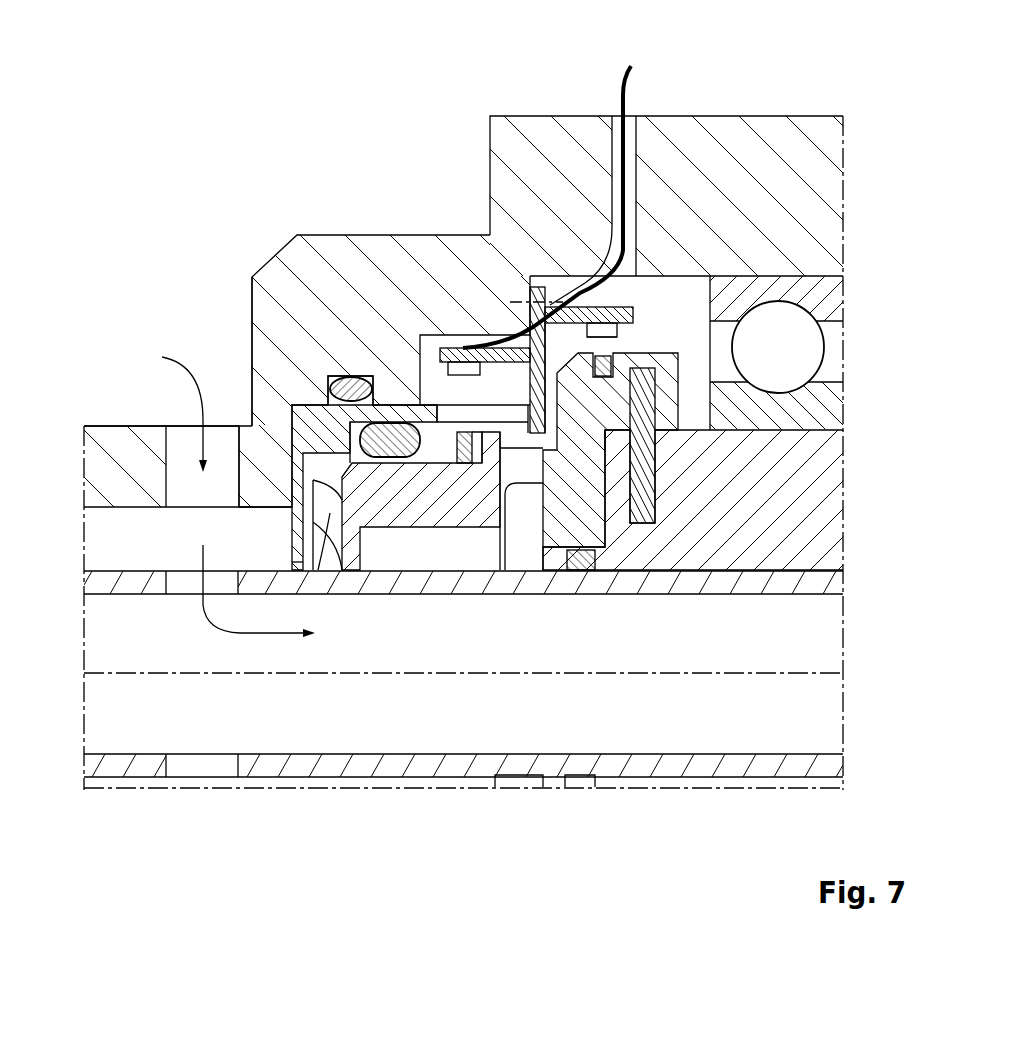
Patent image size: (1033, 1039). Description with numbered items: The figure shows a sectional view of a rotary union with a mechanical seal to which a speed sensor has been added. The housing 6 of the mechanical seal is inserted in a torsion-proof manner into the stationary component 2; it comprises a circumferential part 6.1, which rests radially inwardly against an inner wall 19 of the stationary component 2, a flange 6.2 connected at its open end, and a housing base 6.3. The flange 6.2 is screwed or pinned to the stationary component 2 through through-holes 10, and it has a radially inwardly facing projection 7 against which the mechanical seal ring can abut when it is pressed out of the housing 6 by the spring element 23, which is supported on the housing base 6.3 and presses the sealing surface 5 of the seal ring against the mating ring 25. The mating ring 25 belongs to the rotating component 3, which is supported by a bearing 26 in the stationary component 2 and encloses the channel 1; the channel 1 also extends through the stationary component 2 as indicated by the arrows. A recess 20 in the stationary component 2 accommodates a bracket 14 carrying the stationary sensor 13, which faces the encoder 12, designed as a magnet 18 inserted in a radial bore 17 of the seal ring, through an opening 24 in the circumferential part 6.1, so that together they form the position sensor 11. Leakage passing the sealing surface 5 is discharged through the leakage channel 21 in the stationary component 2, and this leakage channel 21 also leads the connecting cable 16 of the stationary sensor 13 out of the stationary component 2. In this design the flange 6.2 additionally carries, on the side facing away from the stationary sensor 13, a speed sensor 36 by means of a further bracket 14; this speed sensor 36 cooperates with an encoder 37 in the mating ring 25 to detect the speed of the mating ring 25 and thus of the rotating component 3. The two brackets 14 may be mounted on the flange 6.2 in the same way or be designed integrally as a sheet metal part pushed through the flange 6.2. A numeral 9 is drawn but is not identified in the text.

The channel 1 is at (659, 646).
The stationary component 2 is at (298, 250).
The rotating component 3 is at (835, 480).
The sealing surface 5 is at (548, 492).
The housing 6 is at (302, 432).
The circumferential part 6.1 is at (363, 374).
The flange 6.2 is at (540, 383).
The housing base 6.3 is at (292, 543).
The projection 7 is at (545, 422).
The sensor carrier plate 9 is at (538, 287).
The through-holes 10 is at (560, 300).
The position sensor 11 is at (520, 452).
The encoder 12 is at (467, 465).
The stationary sensor 13 is at (432, 352).
The bracket 14 is at (607, 313).
The connecting cable 16 is at (630, 64).
The radial bore 17 is at (442, 457).
The magnet 18 is at (477, 447).
The inner wall 19 is at (308, 405).
The recess 20 is at (385, 408).
The leakage channel 21 is at (640, 150).
The spring element 23 is at (330, 513).
The opening 24 is at (497, 408).
The mating ring 25 is at (597, 518).
The bearing 26 is at (798, 345).
The speed sensor 36 is at (615, 330).
The encoder 37 is at (608, 363).